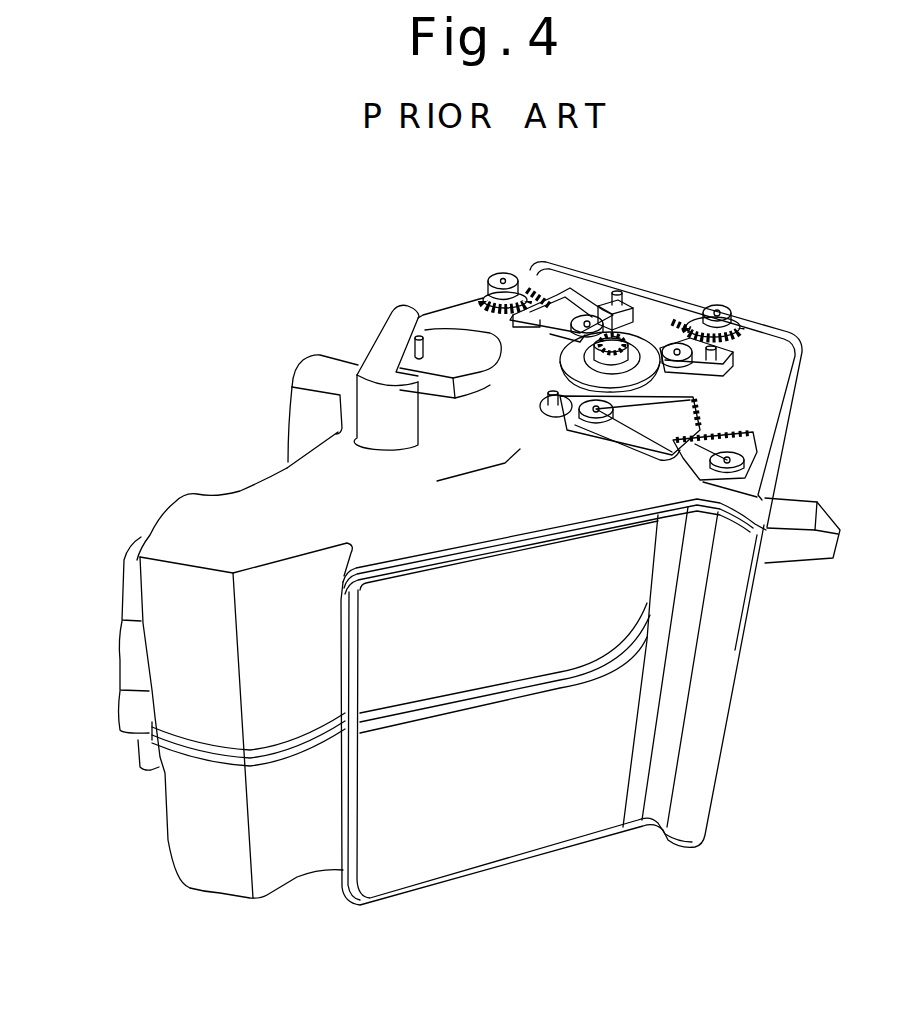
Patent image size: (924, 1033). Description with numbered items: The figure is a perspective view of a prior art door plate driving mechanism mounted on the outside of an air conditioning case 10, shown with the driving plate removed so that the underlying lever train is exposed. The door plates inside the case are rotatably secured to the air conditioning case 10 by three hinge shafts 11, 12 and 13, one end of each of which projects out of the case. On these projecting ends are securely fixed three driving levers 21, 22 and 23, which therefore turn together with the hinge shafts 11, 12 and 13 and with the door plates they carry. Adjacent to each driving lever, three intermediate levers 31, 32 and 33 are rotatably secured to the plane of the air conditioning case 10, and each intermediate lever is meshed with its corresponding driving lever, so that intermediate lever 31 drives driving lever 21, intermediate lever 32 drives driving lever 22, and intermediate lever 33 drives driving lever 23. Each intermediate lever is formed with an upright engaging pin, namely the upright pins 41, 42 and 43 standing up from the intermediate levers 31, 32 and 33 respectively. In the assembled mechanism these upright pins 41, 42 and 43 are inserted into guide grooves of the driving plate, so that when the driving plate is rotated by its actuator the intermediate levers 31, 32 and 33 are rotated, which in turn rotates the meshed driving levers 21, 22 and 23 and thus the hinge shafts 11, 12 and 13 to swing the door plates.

The air conditioning case 10 is at (547, 858).
The hinge shaft 11 is at (717, 305).
The hinge shaft 12 is at (505, 275).
The hinge shaft 13 is at (748, 480).
The driving lever 21 is at (690, 313).
The driving lever 22 is at (483, 290).
The driving lever 23 is at (750, 447).
The intermediate lever 31 is at (727, 367).
The intermediate lever 32 is at (560, 300).
The intermediate lever 33 is at (628, 438).
The upright pin 41 is at (715, 350).
The upright pin 42 is at (617, 292).
The upright pin 43 is at (548, 392).